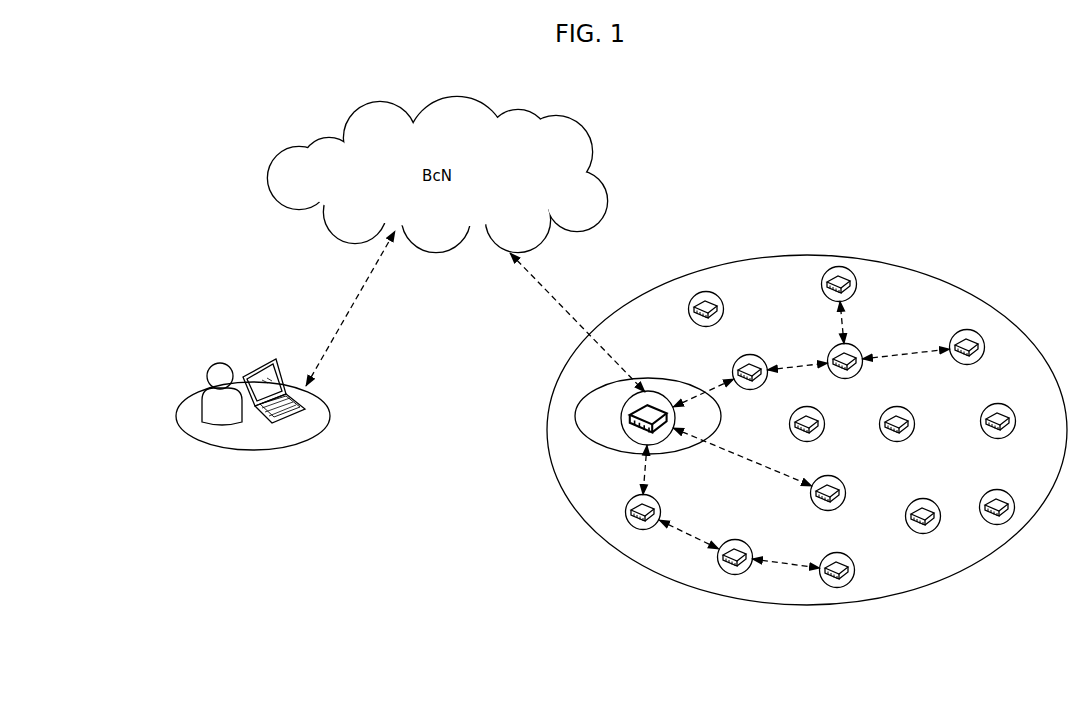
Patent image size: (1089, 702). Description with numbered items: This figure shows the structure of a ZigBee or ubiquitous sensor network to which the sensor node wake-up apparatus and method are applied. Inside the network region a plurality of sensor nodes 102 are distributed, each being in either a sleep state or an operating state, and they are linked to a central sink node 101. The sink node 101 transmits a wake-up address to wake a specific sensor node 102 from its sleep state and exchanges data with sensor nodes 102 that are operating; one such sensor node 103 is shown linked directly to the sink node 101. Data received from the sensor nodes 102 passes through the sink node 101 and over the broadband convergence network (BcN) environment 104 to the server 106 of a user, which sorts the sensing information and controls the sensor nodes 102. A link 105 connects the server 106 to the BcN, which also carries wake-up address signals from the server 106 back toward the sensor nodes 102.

The sink node 101 is at (604, 404).
The sensor node 102 is at (807, 415).
The sensor node 103 is at (623, 487).
The broadband convergence network (BcN) environment 104 is at (577, 322).
The link between BcN and user server 105 is at (350, 308).
The server 106 is at (257, 421).